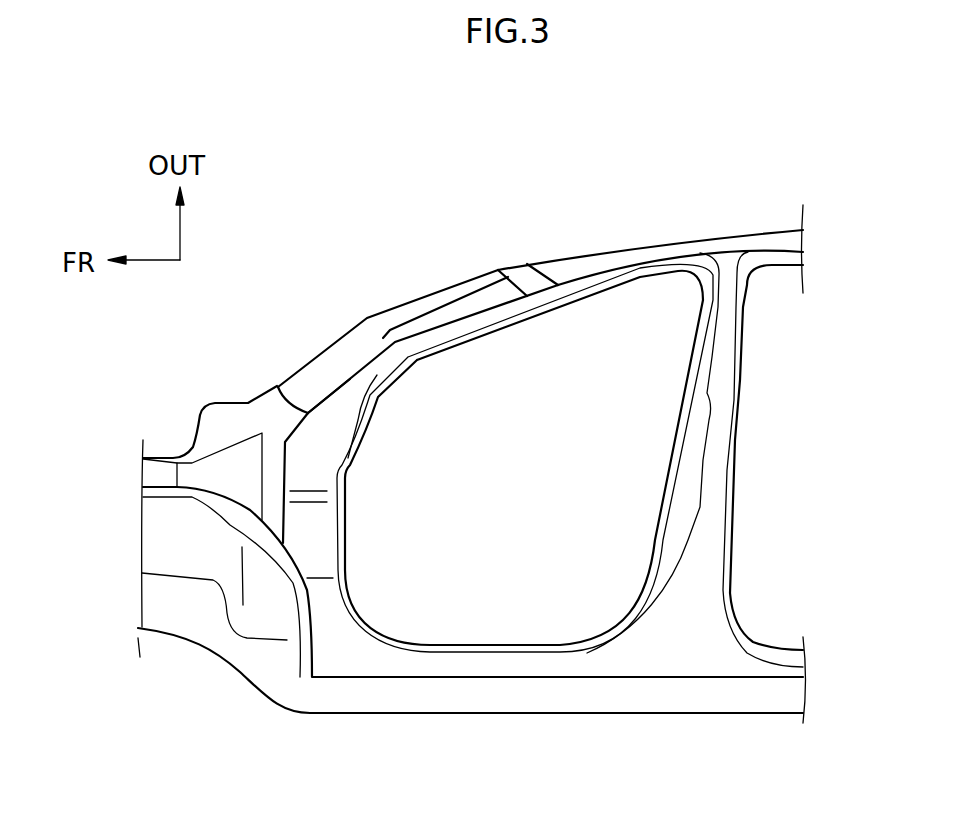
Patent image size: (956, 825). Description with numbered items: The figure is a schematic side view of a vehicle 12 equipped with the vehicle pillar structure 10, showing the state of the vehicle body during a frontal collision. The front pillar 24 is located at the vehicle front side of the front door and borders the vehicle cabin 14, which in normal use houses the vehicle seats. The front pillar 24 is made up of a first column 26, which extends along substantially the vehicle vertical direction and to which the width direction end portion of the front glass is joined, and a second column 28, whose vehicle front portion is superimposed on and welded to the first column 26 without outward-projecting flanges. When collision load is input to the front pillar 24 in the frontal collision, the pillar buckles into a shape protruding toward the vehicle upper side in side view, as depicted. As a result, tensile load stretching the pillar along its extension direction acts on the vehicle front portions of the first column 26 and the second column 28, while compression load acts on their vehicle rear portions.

The vehicle pillar structure 10 is at (352, 298).
The vehicle 12 is at (532, 189).
The vehicle cabin 14 is at (537, 432).
The front pillar 24 is at (448, 278).
The first column 26 is at (410, 297).
The second column 28 is at (343, 372).